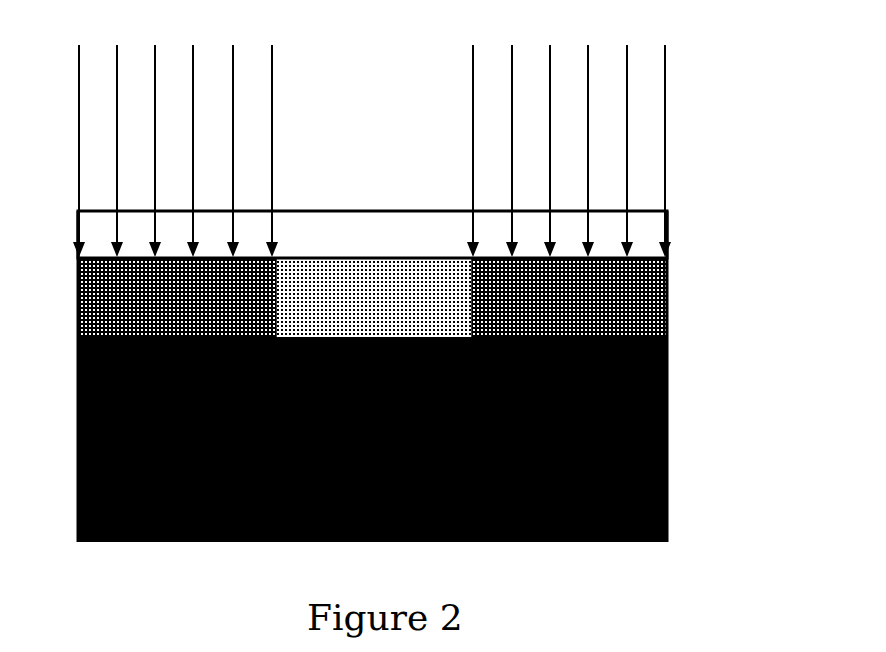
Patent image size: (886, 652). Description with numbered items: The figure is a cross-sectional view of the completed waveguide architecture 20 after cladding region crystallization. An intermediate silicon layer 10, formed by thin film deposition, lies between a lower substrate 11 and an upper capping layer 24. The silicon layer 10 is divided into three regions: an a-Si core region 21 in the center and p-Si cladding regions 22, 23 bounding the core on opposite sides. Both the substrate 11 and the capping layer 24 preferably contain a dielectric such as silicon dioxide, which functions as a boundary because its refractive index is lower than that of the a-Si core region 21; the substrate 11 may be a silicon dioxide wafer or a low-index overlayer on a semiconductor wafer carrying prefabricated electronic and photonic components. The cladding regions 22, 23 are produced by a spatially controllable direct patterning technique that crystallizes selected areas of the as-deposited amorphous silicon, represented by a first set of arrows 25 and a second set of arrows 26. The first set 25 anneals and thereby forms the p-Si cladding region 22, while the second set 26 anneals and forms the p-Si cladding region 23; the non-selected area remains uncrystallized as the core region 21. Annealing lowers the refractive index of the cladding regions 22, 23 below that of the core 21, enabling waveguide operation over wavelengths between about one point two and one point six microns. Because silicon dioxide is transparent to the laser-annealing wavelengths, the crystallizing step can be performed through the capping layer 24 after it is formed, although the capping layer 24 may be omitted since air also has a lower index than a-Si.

The silicon layer 10 is at (371, 345).
The substrate 11 is at (76, 438).
The waveguide architecture 20 is at (437, 151).
The a-Si core region 21 is at (292, 268).
The p-Si cladding region 22 is at (79, 296).
The p-Si cladding region 23 is at (668, 318).
The capping layer 24 is at (79, 232).
The first set of arrows 25 is at (79, 133).
The second set of arrows 26 is at (667, 140).